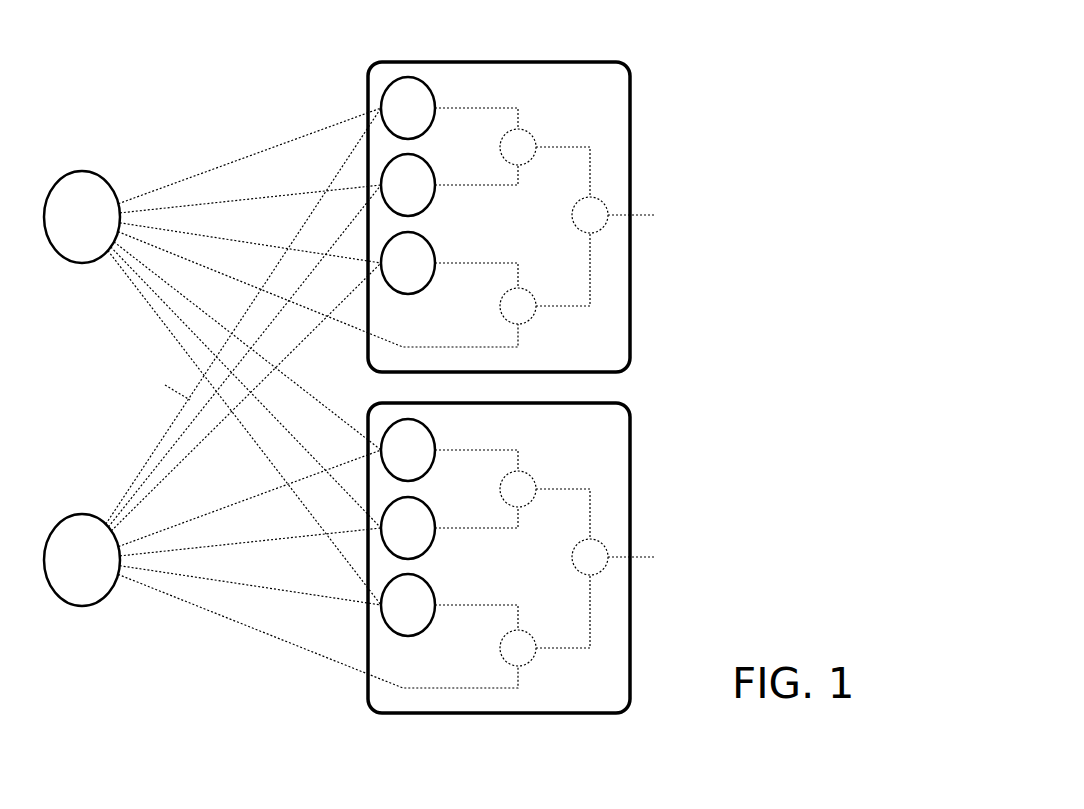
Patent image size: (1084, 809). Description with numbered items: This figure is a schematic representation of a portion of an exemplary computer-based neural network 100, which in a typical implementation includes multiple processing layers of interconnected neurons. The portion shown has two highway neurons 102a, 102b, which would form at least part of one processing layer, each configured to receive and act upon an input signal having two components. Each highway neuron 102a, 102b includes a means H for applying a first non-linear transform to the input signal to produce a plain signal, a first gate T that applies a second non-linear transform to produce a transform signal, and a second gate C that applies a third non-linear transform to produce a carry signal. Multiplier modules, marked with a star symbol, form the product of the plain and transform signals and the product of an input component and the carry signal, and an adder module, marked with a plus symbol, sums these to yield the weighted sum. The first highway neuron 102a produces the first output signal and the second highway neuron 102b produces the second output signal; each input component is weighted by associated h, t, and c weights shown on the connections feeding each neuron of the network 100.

The computer-based neural network 100 is at (843, 98).
The highway neuron 102a is at (368, 83).
The highway neuron 102b is at (357, 687).